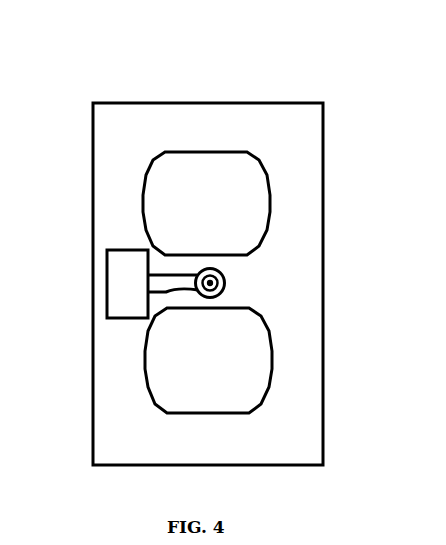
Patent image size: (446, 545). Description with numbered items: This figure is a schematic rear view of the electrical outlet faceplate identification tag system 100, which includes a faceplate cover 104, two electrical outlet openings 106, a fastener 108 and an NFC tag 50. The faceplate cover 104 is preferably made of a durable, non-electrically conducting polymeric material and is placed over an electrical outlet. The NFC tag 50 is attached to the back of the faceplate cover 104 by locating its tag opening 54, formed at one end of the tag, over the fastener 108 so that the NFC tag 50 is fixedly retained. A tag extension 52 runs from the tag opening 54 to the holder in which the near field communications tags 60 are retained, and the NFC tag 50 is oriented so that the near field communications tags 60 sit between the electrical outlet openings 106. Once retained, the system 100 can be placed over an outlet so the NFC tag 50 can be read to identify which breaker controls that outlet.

The electrical outlet faceplate identification tag system 100 is at (336, 87).
The faceplate cover 104 is at (324, 382).
The electrical outlet openings 106 is at (268, 184).
The fastener 108 is at (225, 282).
The tag opening 54 is at (224, 273).
The tag extension 52 is at (179, 277).
The near field communications tags 60 is at (107, 277).
The near-field communications (NFC) tag 50 is at (85, 324).